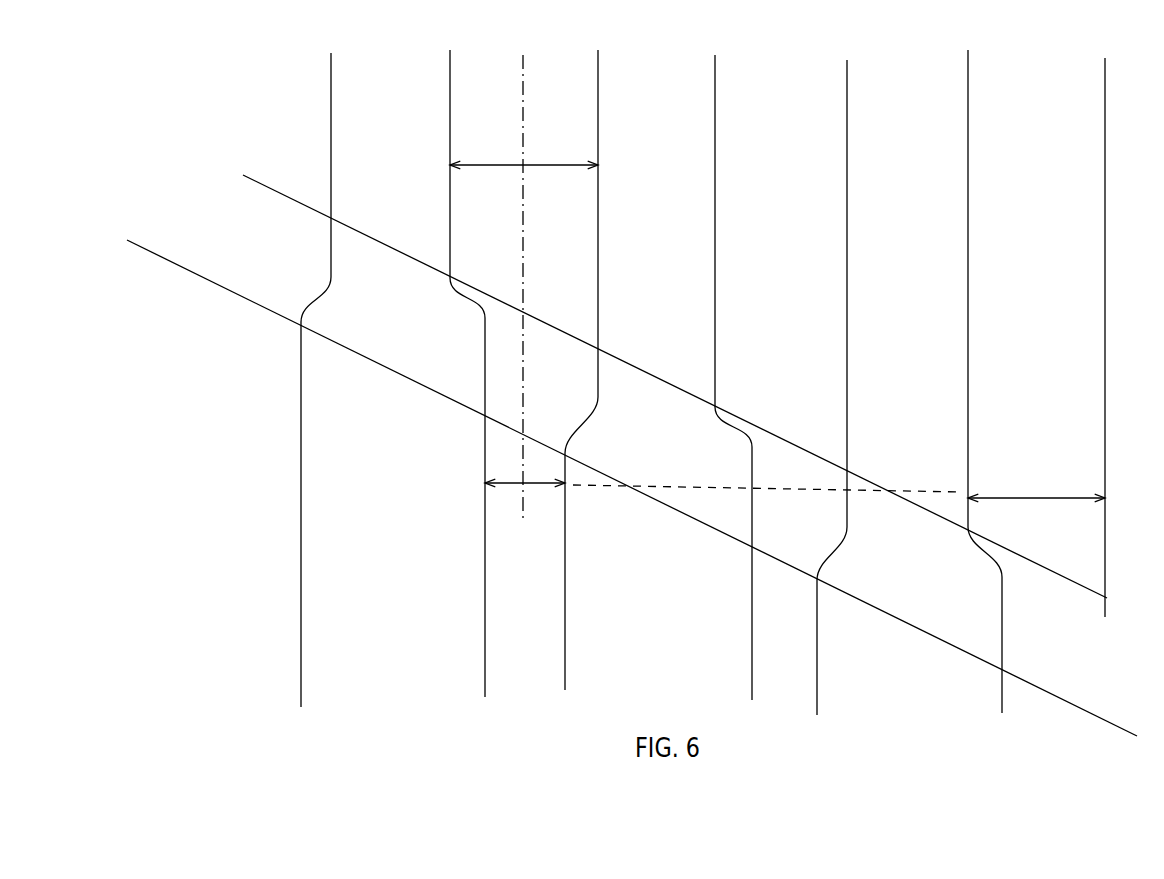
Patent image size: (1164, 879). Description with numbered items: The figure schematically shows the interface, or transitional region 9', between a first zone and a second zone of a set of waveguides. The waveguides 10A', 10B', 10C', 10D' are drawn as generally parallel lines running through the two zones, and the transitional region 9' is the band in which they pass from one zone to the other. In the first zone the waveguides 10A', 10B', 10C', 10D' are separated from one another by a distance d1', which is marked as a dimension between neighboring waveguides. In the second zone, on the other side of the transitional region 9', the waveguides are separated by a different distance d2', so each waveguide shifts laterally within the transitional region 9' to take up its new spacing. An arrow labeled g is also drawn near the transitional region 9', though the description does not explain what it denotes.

The waveguide 10A' is at (304, 362).
The waveguide 10B' is at (552, 361).
The waveguide 10C' is at (816, 376).
The waveguide 10D' is at (1062, 371).
The transitional region 9' is at (606, 455).
The distance d1' is at (777, 312).
The distance d2' is at (723, 498).
The direction arrow g is at (1127, 698).